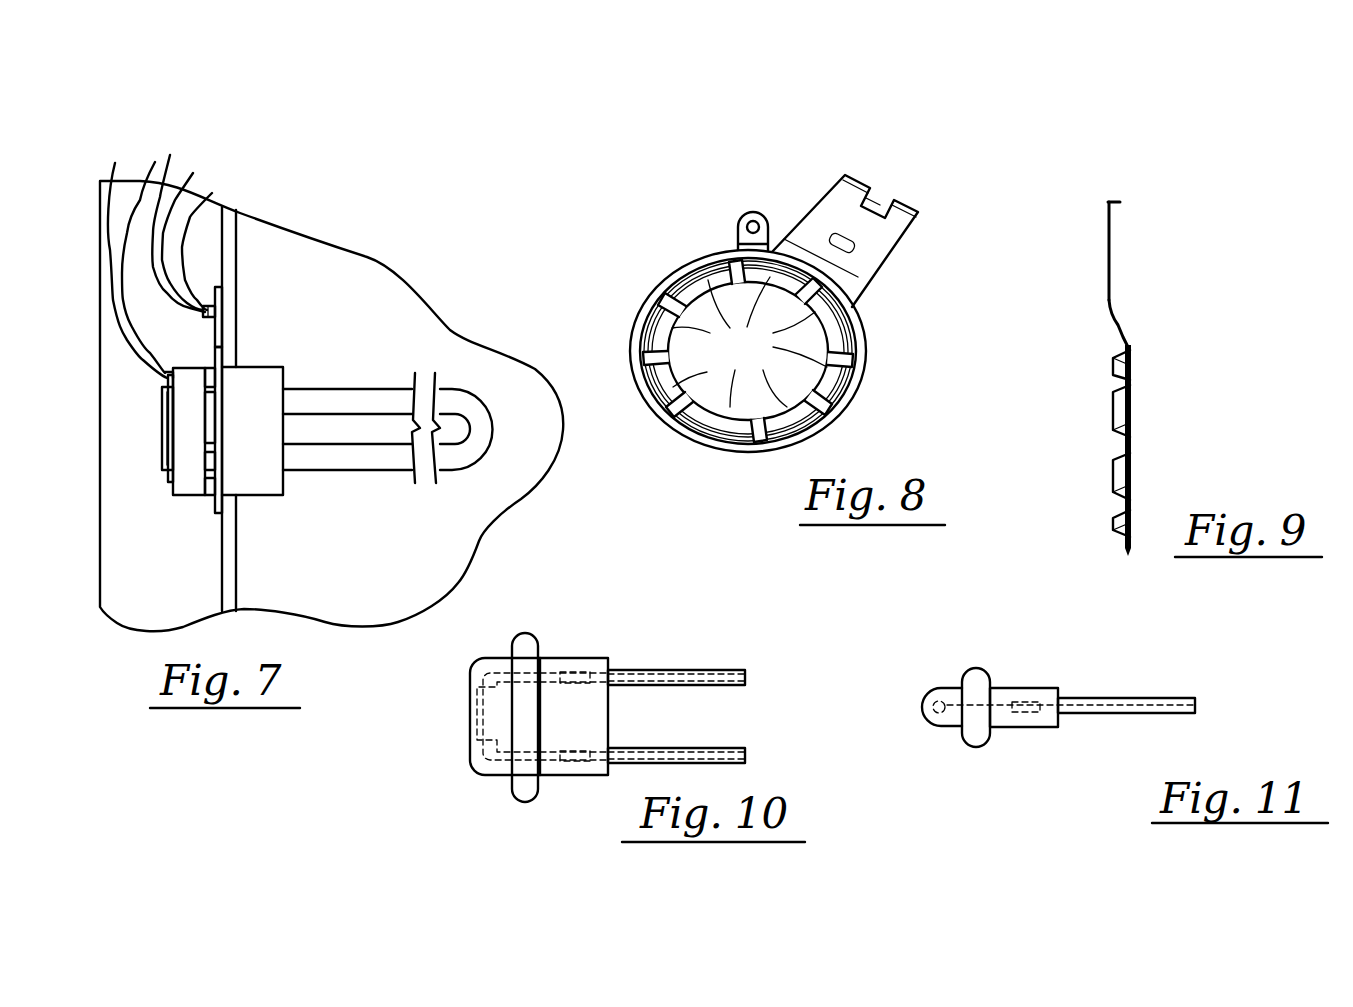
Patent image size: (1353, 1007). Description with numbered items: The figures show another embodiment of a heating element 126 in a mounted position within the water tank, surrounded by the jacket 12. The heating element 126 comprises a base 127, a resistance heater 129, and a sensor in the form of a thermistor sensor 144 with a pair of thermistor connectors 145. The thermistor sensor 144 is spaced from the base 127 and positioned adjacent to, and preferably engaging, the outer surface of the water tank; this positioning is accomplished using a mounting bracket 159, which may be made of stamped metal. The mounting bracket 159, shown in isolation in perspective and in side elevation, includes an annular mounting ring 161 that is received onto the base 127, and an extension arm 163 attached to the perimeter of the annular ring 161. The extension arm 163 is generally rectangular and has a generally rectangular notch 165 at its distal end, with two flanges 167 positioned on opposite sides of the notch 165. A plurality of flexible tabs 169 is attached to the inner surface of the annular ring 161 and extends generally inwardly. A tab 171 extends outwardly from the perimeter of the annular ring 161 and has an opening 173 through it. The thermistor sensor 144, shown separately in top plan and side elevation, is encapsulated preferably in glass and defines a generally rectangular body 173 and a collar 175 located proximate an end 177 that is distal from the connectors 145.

In FIG. 7, the jacket 12 is at (100, 463).
In FIG. 7, the heating element 126 is at (266, 522).
In FIG. 7, the base 127 is at (190, 483).
In FIG. 7, the resistance heater 129 is at (378, 385).
In FIG. 7, the thermistor sensor 144 is at (218, 333).
In FIG. 10, the thermistor sensor 144 is at (657, 626).
In FIG. 11, the thermistor sensor 144 is at (1026, 754).
In FIG. 7, the thermistor connectors 145 is at (193, 173).
In FIG. 10, the thermistor connectors 145 is at (733, 745).
In FIG. 7, the mounting bracket 159 is at (218, 342).
In FIG. 8, the mounting bracket 159 is at (901, 327).
In FIG. 9, the mounting bracket 159 is at (1152, 306).
In FIG. 8, the annular mounting ring 161 is at (847, 402).
In FIG. 9, the annular mounting ring 161 is at (1130, 407).
In FIG. 8, the extension arm 163 is at (897, 248).
In FIG. 9, the extension arm 163 is at (1129, 240).
In FIG. 8, the notch 165 is at (877, 197).
In FIG. 8, the flanges 167 is at (858, 172).
In FIG. 9, the flanges 167 is at (1118, 200).
In FIG. 8, the flexible tabs 169 is at (748, 351).
In FIG. 8, the tab 171 is at (752, 220).
In FIG. 8, the opening / rectangular body 173 is at (736, 224).
In FIG. 10, the opening / rectangular body 173 is at (582, 658).
In FIG. 11, the opening / rectangular body 173 is at (1053, 688).
In FIG. 10, the collar 175 is at (540, 610).
In FIG. 11, the collar 175 is at (988, 652).
In FIG. 10, the end 177 is at (468, 723).